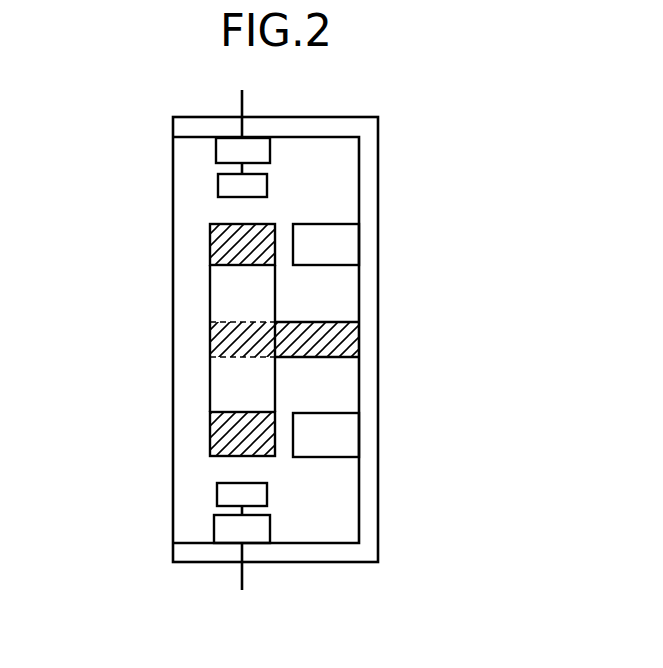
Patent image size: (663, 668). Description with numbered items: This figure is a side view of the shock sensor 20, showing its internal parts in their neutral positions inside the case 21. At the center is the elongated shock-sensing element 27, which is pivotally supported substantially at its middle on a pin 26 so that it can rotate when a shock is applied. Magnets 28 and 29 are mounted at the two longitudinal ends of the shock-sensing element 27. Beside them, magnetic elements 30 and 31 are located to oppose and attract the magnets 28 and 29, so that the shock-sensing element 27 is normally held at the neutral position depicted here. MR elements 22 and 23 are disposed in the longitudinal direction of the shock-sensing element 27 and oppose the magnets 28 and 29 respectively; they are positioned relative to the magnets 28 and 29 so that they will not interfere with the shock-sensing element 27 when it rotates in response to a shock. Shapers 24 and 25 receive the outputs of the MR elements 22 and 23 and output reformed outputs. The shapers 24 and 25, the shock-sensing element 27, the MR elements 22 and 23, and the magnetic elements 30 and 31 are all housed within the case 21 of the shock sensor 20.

The motor 20 is at (407, 143).
The case 21 is at (322, 117).
The MR element 22 is at (217, 492).
The MR element 23 is at (218, 187).
The shaper 24 is at (214, 529).
The shaper 25 is at (216, 150).
The pin 26 is at (218, 341).
The shock-sensing element 27 is at (218, 388).
The magnet 28 is at (218, 434).
The magnet 29 is at (218, 242).
The magnetic element 30 is at (348, 435).
The magnetic element 31 is at (348, 243).